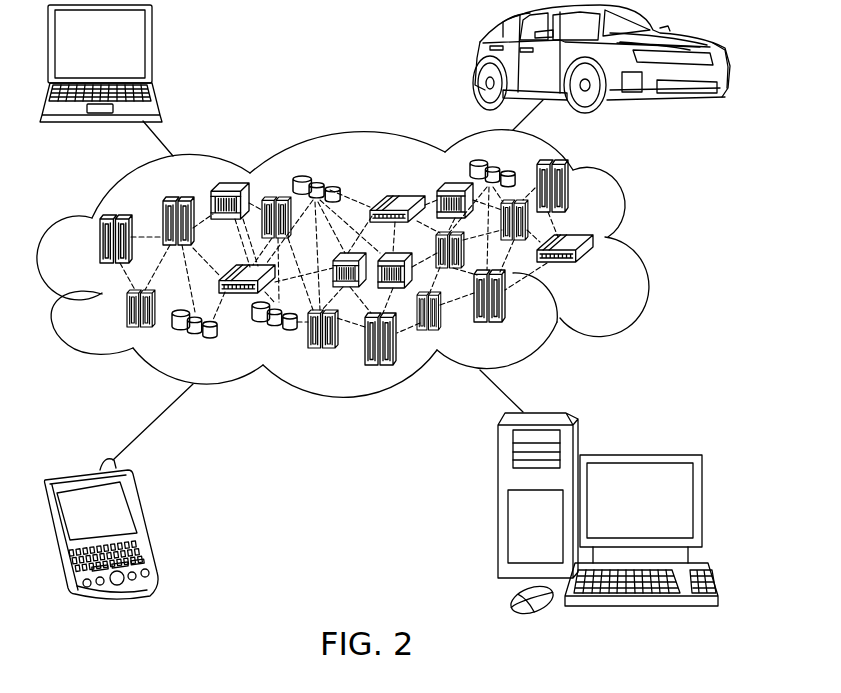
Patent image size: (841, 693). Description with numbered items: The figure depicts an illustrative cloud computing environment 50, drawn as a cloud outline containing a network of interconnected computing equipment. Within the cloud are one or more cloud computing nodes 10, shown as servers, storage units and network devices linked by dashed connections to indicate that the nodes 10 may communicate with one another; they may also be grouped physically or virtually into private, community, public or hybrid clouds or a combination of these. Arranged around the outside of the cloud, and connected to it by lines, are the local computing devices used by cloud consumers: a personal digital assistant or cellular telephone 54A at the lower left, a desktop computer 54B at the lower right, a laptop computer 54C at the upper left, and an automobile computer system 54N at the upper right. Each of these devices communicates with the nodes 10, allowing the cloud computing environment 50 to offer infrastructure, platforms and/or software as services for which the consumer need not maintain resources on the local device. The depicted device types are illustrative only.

The cloud computing node 10 is at (596, 267).
The cloud computing environment 50 is at (632, 237).
The personal digital assistant or cellular telephone 54A is at (143, 525).
The desktop computer 54B is at (640, 455).
The laptop computer 54C is at (152, 50).
The automobile computer system 54N is at (478, 62).